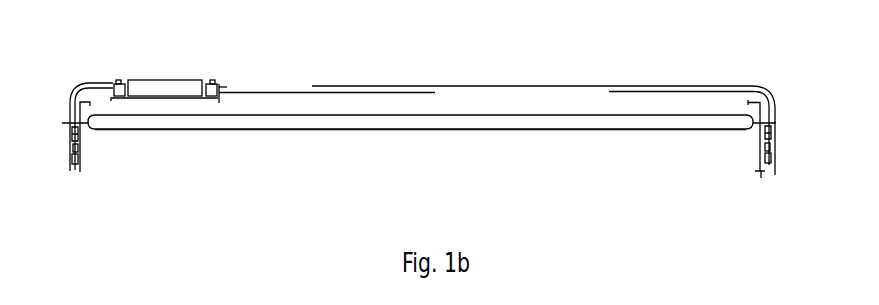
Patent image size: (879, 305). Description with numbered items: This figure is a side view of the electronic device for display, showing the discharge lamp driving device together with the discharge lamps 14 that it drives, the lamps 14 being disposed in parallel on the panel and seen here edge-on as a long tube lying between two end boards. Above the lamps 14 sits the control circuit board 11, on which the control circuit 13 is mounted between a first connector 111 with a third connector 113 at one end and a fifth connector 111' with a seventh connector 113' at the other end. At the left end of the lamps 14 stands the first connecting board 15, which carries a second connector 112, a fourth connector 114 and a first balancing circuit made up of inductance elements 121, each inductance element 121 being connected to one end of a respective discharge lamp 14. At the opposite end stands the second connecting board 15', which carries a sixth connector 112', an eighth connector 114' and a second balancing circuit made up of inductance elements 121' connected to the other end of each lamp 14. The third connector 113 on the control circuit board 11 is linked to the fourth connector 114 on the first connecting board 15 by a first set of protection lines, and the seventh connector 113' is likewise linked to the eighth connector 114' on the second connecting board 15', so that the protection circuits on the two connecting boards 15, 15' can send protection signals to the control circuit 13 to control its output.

The control circuit board 11 is at (206, 82).
The control circuit 13 is at (151, 79).
The discharge lamps 14 is at (435, 132).
The first connecting board 15 is at (78, 172).
The second connecting board 15' is at (543, 143).
The first connector 111 is at (113, 83).
The fifth connector 111' is at (249, 77).
The second connector 112 is at (73, 150).
The sixth connector 112' is at (792, 167).
The third connector 113 is at (122, 80).
The seventh connector 113' is at (251, 59).
The fourth connector 114 is at (71, 164).
The eighth connector 114' is at (782, 190).
The inductance elements 121 is at (71, 131).
The inductance elements 121' is at (799, 145).